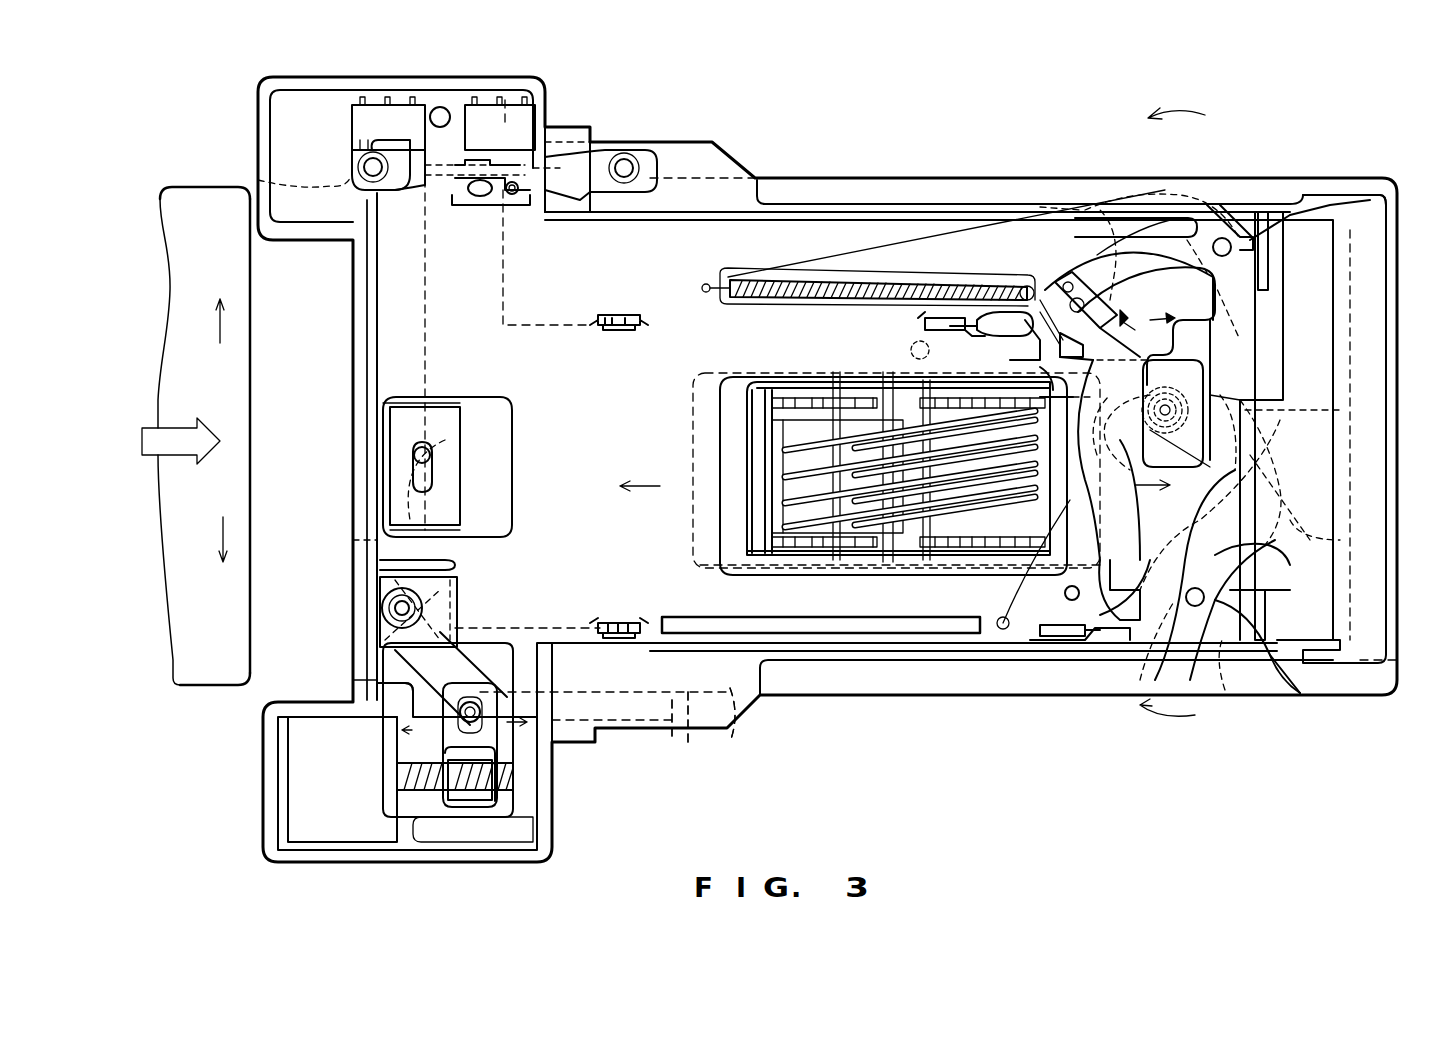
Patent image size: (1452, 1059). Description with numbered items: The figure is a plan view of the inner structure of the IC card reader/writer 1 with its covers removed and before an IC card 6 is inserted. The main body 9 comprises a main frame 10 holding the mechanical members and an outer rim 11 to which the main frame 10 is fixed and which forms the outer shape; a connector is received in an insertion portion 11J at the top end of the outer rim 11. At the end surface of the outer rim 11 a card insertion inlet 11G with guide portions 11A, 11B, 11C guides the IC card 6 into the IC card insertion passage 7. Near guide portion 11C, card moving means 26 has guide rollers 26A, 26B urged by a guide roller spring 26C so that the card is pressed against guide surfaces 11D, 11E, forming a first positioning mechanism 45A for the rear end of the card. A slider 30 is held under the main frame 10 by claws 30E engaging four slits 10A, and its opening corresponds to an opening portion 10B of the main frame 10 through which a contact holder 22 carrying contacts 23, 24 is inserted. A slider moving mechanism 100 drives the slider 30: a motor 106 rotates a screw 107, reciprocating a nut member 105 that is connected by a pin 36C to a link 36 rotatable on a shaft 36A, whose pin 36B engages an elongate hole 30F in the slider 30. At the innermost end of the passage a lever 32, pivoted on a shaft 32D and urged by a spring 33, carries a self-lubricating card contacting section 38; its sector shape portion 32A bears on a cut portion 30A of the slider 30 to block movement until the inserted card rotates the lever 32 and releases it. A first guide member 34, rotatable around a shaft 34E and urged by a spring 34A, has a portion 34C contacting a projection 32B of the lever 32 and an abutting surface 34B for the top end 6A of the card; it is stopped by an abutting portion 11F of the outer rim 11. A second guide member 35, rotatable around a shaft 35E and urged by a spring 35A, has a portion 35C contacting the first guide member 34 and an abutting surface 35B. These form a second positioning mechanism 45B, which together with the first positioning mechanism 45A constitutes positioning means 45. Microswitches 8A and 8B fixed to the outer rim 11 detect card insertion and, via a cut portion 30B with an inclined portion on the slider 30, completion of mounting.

The IC card reader/writer 1 is at (1275, 85).
The IC card 6 is at (210, 188).
The top end of the IC card 6A is at (252, 310).
The IC card insertion passage 7 is at (733, 705).
The microswitch 8A is at (370, 110).
The microswitch 8B is at (520, 110).
The main body 9 is at (895, 185).
The main frame 10 is at (738, 225).
The slits 10A is at (592, 322).
The opening portion 10B is at (712, 450).
The outer rim 11 is at (845, 192).
The guide portion 11A is at (360, 540).
The guide portion 11B is at (360, 684).
The guide portion 11C is at (345, 188).
The guide surface 11D is at (393, 688).
The guide surface 11E is at (680, 705).
The abutting portion 11F is at (1224, 700).
The card insertion inlet 11G is at (355, 470).
The insertion portion 11J is at (1362, 215).
The contact holder 22 is at (1040, 520).
The contact 23 is at (925, 555).
The contact 24 is at (983, 520).
The card moving means 26 is at (568, 150).
The guide roller 26A is at (365, 160).
The guide roller 26B is at (628, 155).
The guide roller spring 26C is at (443, 160).
The slider 30 is at (500, 435).
The cut portion 30A is at (1025, 358).
The cut portion 30B is at (480, 150).
The claws 30E is at (605, 316).
The elongate hole 30F is at (435, 470).
The lever 32 is at (1040, 300).
The sector shape portion 32A is at (1040, 620).
The projection 32B is at (1283, 492).
The shaft 32D is at (1175, 405).
The spring 33 is at (905, 280).
The first guide member 34 is at (1140, 680).
The spring 34A is at (1240, 615).
The abutting surface 34B is at (1100, 615).
The portion 34C is at (1310, 538).
The shaft 34E is at (1290, 680).
The second guide member 35 is at (1215, 240).
The spring 35A is at (1260, 240).
The abutting surface 35B is at (1105, 210).
The portion 35C is at (1300, 412).
The shaft 35E is at (1320, 215).
The link 36 is at (453, 667).
The shaft 36A is at (393, 608).
The pin 36B is at (425, 448).
The pin 36C is at (480, 705).
The card contacting section 38 is at (1000, 330).
The positioning means 45 is at (1240, 600).
The first positioning mechanism 45A is at (395, 165).
The second positioning mechanism 45B is at (1245, 555).
The slider moving mechanism 100 is at (336, 822).
The nut member 105 is at (478, 802).
The motor 106 is at (300, 790).
The screw 107 is at (412, 795).